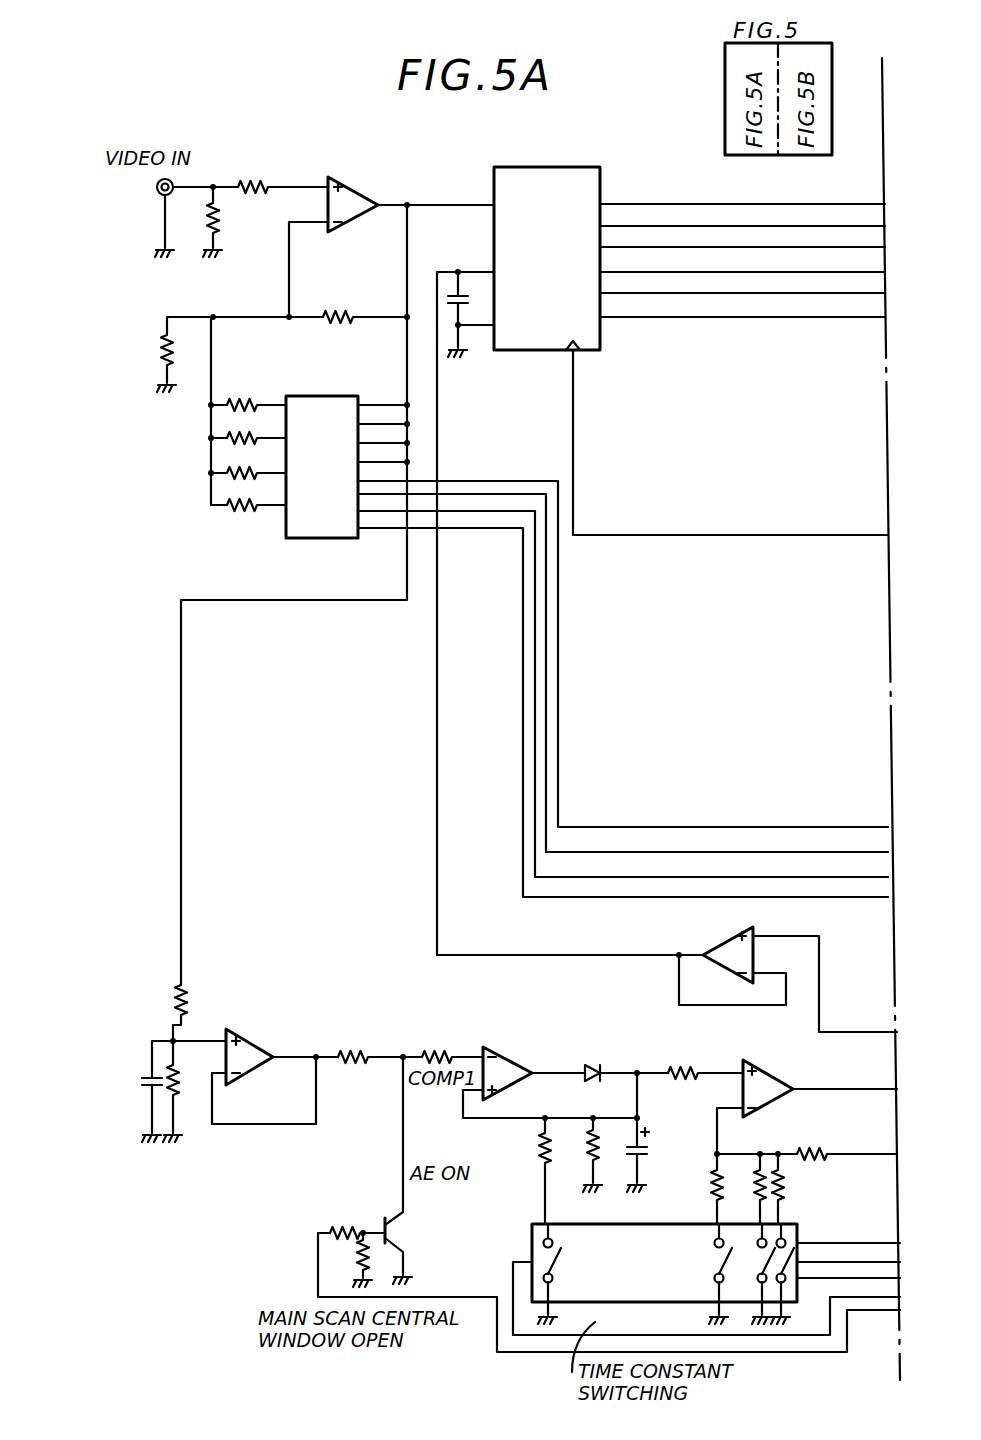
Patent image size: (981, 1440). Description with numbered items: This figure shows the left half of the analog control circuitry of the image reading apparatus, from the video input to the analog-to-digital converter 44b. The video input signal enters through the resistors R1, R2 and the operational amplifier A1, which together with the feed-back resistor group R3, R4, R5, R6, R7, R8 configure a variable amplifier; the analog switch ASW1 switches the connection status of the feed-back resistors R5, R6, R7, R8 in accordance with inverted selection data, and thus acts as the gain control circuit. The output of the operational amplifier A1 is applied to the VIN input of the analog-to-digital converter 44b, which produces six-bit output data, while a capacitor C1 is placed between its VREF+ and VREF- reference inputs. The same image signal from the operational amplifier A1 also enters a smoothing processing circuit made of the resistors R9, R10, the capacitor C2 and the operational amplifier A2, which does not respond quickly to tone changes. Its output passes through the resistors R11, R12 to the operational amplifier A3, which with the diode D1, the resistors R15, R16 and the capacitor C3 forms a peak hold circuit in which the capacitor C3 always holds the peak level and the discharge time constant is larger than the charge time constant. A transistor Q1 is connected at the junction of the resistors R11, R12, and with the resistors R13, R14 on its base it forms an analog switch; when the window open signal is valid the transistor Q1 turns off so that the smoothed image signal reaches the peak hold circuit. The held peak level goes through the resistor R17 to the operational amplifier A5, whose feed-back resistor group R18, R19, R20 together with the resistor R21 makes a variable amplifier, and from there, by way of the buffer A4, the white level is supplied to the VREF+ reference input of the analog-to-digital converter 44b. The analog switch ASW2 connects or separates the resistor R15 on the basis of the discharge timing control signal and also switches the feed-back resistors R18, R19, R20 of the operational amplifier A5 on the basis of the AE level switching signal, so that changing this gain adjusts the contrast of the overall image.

The analog-to-digital converter 44b is at (544, 167).
The resistor R1 is at (225, 223).
The resistor R2 is at (283, 175).
The feed-back resistor R3 is at (168, 354).
The feed-back resistor R4 is at (310, 305).
The feed-back resistor R5 is at (247, 395).
The feed-back resistor R6 is at (247, 428).
The feed-back resistor R7 is at (247, 463).
The feed-back resistor R8 is at (248, 495).
The resistor R9 is at (196, 1013).
The resistor R10 is at (190, 1091).
The resistor R11 is at (380, 1045).
The resistor R12 is at (452, 1045).
The resistor R13 is at (355, 1221).
The resistor R14 is at (347, 1260).
The resistor R15 is at (525, 1169).
The resistor R16 is at (581, 1153).
The resistor R17 is at (705, 1059).
The feed-back resistor R18 is at (700, 1189).
The feed-back resistor R19 is at (749, 1189).
The feed-back resistor R20 is at (799, 1189).
The resistor R21 is at (805, 1141).
The capacitor C1 is at (466, 612).
The capacitor C2 is at (168, 1090).
The capacitor C3 is at (650, 1132).
The operational amplifier A1 is at (352, 190).
The operational amplifier A2 is at (260, 1045).
The operational amplifier A3 is at (510, 1060).
The buffer A4 is at (722, 947).
The operational amplifier A5 is at (763, 1075).
The diode D1 is at (625, 1059).
The transistor Q1 is at (412, 1170).
The analog switch ASW1 is at (587, 646).
The analog switch ASW2 is at (609, 1288).